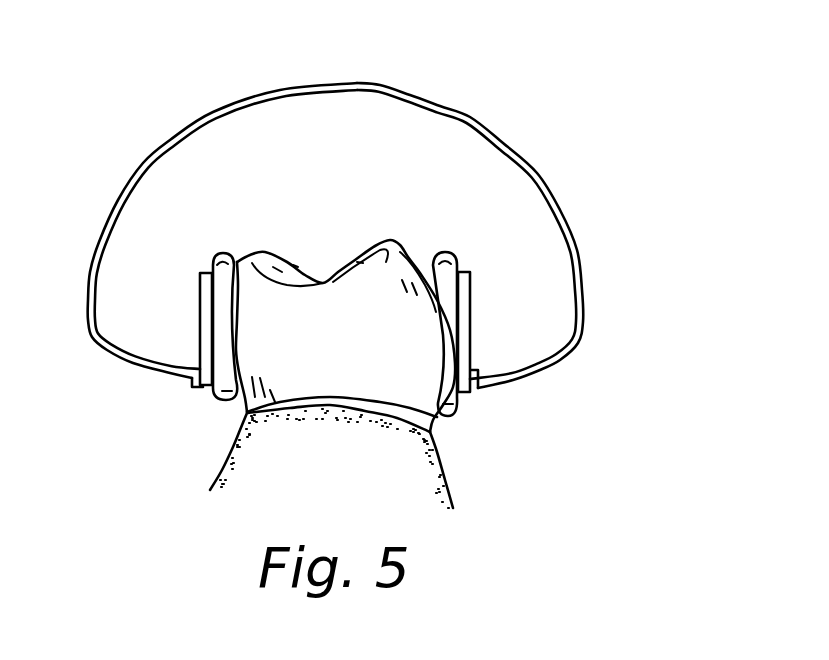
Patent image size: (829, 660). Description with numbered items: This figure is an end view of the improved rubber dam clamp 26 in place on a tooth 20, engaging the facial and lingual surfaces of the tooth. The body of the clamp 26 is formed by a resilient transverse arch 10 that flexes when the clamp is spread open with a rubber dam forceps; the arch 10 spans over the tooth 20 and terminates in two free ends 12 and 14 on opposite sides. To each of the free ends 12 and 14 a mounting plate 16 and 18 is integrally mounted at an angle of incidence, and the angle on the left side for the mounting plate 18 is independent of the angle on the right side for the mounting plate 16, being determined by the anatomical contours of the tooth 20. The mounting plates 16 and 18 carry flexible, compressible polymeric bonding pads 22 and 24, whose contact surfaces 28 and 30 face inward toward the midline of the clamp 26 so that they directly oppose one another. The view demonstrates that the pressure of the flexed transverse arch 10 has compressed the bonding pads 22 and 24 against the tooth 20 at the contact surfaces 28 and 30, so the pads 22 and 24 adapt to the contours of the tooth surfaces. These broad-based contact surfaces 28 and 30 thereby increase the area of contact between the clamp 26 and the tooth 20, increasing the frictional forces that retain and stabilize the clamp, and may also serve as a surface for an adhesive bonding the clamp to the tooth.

The resilient transverse arch 10 is at (378, 83).
The free end 12 is at (540, 370).
The free end 14 is at (147, 367).
The mounting plate 16 is at (470, 313).
The mounting plate 18 is at (200, 307).
The tooth 20 is at (283, 366).
The flexible polymeric bonding pad 22 is at (443, 253).
The flexible polymeric bonding pad 24 is at (227, 256).
The rubber dam clamp 26 is at (593, 228).
The contact surface 28 is at (435, 262).
The contact surface 30 is at (240, 250).